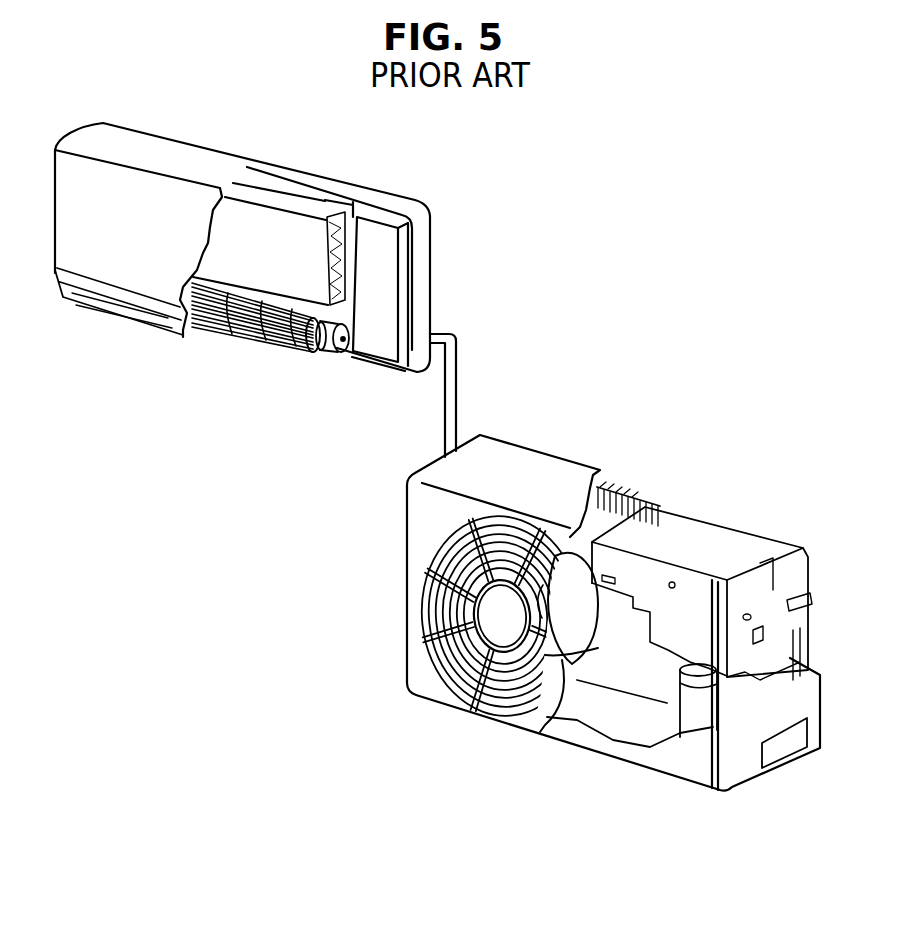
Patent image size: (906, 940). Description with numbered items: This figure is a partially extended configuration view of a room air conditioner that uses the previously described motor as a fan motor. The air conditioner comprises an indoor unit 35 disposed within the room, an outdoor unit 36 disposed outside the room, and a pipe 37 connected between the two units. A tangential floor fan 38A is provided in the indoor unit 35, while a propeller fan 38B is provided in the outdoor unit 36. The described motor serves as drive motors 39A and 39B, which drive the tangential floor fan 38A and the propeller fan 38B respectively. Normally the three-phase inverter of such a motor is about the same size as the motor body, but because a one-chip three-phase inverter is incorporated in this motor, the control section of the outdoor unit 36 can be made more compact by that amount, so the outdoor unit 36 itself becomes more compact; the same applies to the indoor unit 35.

The indoor unit 35 is at (431, 234).
The outdoor unit 36 is at (515, 452).
The pipe 37 is at (457, 367).
The tangential floor fan 38A is at (223, 332).
The drive motor 39A is at (328, 357).
The propeller fan 38B is at (565, 667).
The drive motor 39B is at (568, 535).